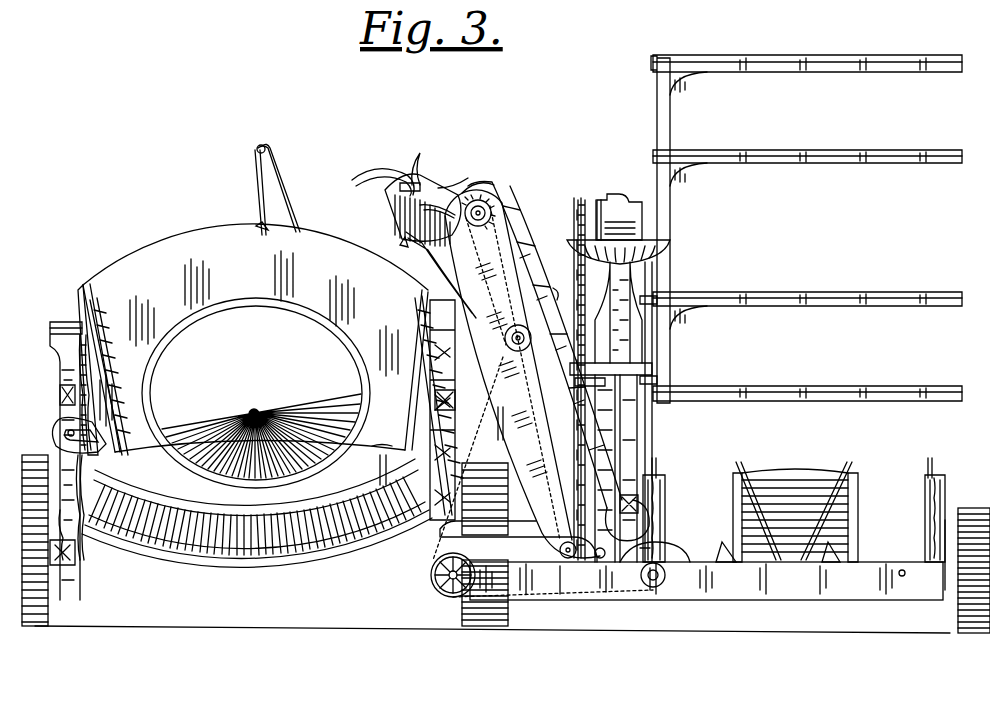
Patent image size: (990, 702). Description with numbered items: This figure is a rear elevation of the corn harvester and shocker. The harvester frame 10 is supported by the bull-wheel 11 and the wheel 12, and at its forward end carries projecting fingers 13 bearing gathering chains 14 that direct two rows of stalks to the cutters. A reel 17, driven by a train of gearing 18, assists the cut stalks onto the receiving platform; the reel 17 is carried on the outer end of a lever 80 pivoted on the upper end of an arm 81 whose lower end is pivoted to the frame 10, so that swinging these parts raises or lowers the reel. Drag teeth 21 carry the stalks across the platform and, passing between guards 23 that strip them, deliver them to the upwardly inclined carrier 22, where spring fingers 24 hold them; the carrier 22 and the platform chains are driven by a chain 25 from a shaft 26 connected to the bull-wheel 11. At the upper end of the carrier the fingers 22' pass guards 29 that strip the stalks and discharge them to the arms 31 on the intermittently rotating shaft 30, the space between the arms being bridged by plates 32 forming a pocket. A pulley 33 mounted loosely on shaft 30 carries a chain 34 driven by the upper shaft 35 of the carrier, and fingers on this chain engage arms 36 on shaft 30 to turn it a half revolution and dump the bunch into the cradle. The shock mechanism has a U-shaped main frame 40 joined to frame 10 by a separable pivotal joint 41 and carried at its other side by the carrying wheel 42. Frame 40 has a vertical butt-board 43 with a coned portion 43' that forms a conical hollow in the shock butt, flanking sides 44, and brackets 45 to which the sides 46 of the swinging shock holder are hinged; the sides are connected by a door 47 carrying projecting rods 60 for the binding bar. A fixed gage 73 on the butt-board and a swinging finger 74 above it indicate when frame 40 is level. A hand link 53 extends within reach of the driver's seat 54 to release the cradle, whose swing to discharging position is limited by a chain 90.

The harvester frame 10 is at (790, 590).
The wheel 11 is at (490, 632).
The wheel 12 is at (965, 612).
The projecting fingers 13 is at (665, 500).
The gathering chains 14 is at (663, 470).
The reel 17 is at (825, 68).
The train of gearing 18 is at (580, 222).
The drag teeth 21 is at (742, 552).
The upwardly inclined carrier 22 is at (545, 335).
The fingers of the carrier 22' is at (647, 488).
The guards 23 is at (660, 545).
The spring fingers 24 is at (557, 330).
The chain 25 is at (496, 355).
The shaft 26 is at (445, 592).
The guards 29 is at (484, 202).
The intermittently rotating shaft 30 is at (395, 200).
The arms 31 is at (375, 180).
The plates 32 is at (448, 188).
The pulley 33 is at (408, 180).
The chain 34 is at (422, 240).
The upper shaft 35 is at (495, 200).
The arms 36 is at (420, 172).
The main frame 40 is at (60, 405).
The separable pivotal joint 41 is at (430, 535).
The carrying wheel 42 is at (48, 605).
The butt-board 43 is at (255, 317).
The coned portion of the butt-board 43' is at (256, 393).
The flanking sides 44 is at (80, 292).
The bracket 45 is at (52, 323).
The side of the shock holder 46 is at (100, 368).
The door 47 is at (275, 560).
The hand link 53 is at (588, 283).
The driver's seat 54 is at (650, 256).
The projecting rods 60 is at (360, 540).
The fixed gage 73 is at (262, 232).
The swinging finger 74 is at (264, 200).
The lever 80 is at (622, 198).
The arm 81 is at (632, 328).
The chain 90 is at (83, 530).